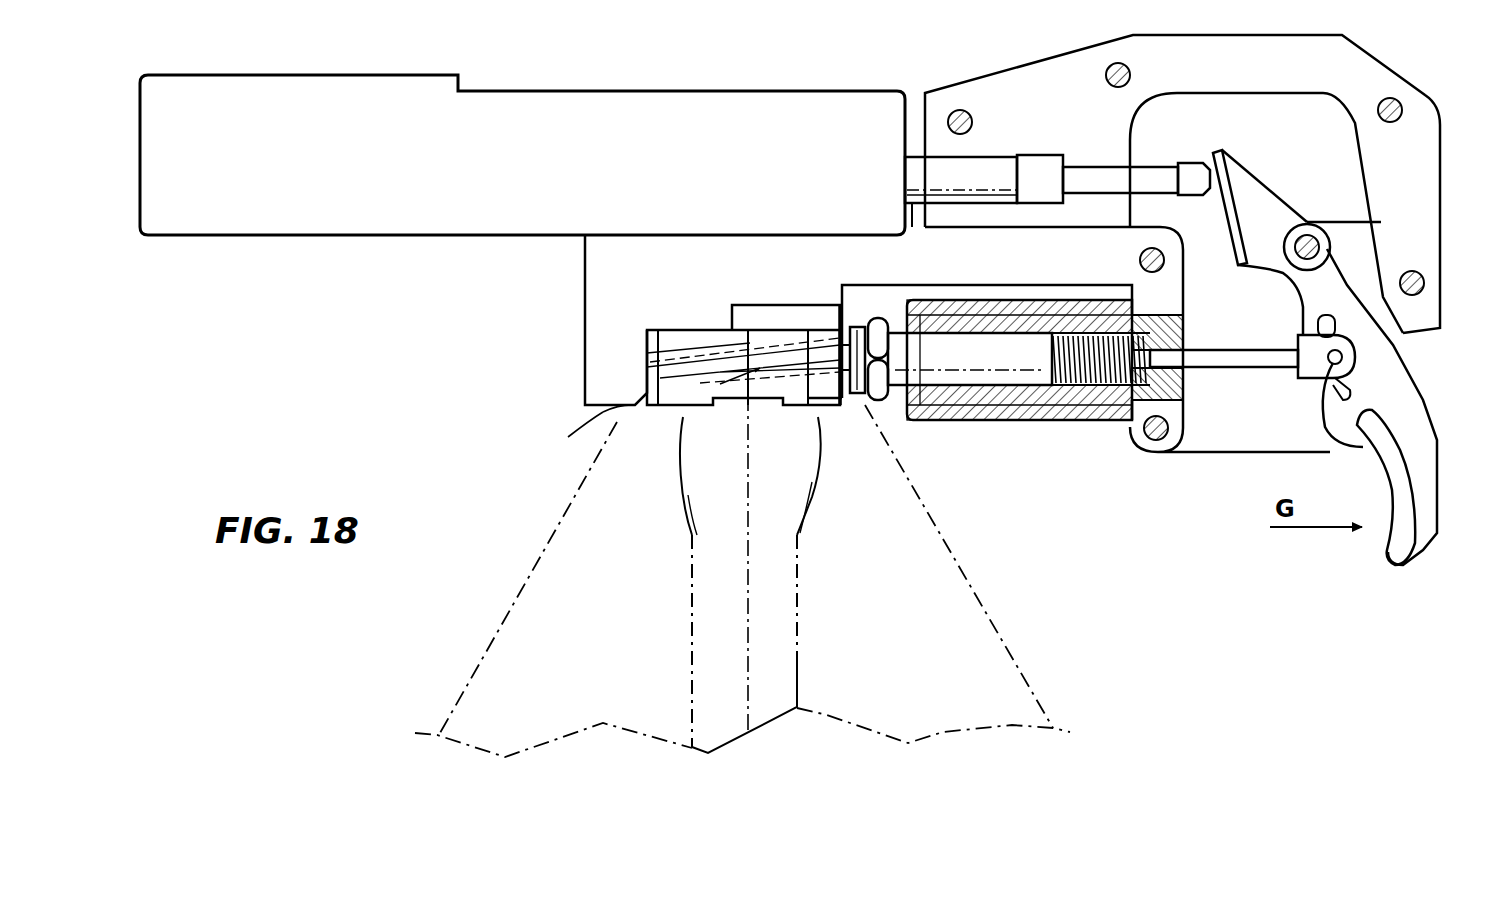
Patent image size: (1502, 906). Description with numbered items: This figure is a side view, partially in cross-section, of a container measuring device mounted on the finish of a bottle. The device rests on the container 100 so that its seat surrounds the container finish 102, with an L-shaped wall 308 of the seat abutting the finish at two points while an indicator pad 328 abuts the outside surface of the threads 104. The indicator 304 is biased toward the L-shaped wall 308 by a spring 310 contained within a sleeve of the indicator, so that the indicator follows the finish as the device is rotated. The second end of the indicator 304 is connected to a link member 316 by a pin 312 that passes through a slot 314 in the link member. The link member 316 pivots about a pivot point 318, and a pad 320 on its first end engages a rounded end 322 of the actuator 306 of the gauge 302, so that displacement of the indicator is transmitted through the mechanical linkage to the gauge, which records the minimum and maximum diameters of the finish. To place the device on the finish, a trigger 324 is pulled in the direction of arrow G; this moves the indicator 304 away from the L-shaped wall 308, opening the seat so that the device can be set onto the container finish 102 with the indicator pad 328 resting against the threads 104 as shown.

The container 100 is at (952, 660).
The container finish 102 is at (652, 421).
The thread 104 is at (680, 368).
The gauge 302 is at (553, 185).
The indicator 304 is at (984, 432).
The actuator 306 is at (1087, 180).
The L-shaped wall 308 is at (565, 434).
The spring 310 is at (1100, 382).
The pin 312 is at (1332, 365).
The slot 314 is at (1337, 378).
The link member 316 is at (1377, 370).
The pivot point 318 is at (1311, 232).
The pad 320 is at (1220, 210).
The rounded end 322 is at (1213, 173).
The trigger 324 is at (1398, 552).
The indicator pad 328 is at (857, 417).